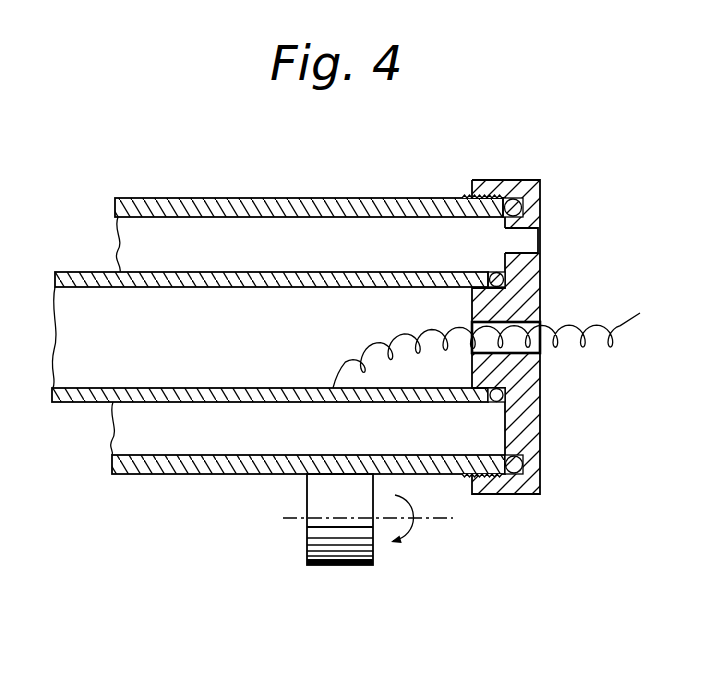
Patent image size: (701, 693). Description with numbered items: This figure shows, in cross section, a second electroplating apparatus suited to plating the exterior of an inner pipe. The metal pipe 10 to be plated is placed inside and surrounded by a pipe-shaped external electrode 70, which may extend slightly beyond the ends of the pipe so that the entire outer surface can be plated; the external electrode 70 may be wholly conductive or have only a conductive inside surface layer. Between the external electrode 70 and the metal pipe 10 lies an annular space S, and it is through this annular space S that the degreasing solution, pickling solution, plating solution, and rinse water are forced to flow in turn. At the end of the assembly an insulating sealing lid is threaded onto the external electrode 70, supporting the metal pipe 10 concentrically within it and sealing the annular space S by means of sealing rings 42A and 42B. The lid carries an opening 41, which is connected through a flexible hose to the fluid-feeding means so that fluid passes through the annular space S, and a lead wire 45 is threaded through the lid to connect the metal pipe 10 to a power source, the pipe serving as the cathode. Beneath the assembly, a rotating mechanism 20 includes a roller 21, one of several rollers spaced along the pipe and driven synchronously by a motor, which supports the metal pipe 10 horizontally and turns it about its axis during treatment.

The external electrode 70 is at (188, 199).
The metal pipe 10 is at (322, 272).
The annular space S is at (398, 232).
The opening 41 is at (536, 236).
The sealing ring 42A is at (505, 399).
The sealing ring 42B is at (520, 466).
The lead wire 45 is at (603, 318).
The rotating mechanism 20 is at (300, 551).
The roller 21 is at (335, 567).